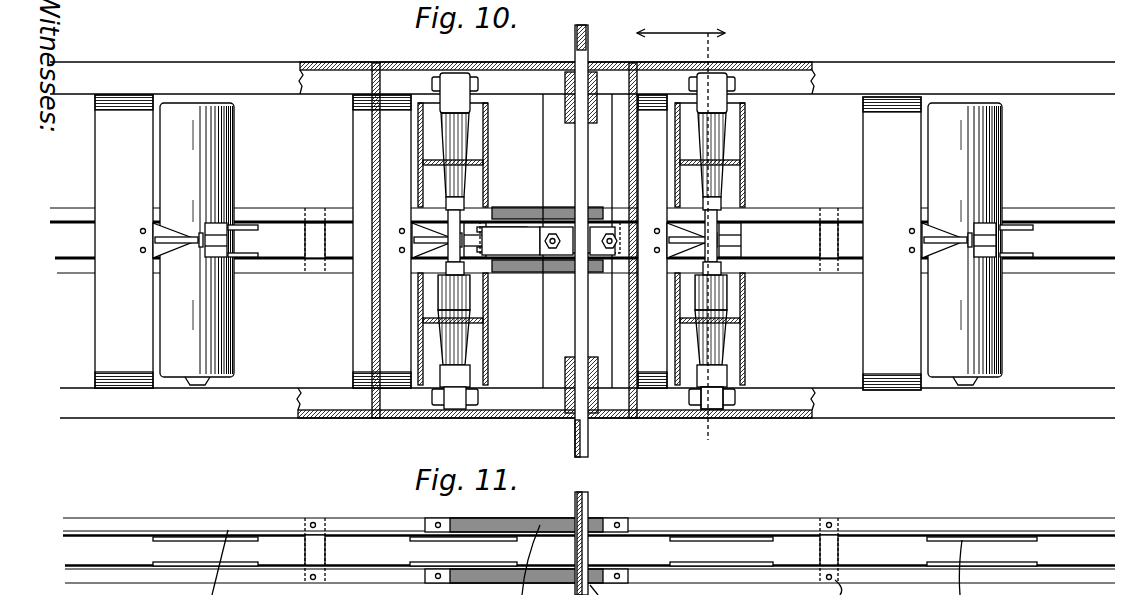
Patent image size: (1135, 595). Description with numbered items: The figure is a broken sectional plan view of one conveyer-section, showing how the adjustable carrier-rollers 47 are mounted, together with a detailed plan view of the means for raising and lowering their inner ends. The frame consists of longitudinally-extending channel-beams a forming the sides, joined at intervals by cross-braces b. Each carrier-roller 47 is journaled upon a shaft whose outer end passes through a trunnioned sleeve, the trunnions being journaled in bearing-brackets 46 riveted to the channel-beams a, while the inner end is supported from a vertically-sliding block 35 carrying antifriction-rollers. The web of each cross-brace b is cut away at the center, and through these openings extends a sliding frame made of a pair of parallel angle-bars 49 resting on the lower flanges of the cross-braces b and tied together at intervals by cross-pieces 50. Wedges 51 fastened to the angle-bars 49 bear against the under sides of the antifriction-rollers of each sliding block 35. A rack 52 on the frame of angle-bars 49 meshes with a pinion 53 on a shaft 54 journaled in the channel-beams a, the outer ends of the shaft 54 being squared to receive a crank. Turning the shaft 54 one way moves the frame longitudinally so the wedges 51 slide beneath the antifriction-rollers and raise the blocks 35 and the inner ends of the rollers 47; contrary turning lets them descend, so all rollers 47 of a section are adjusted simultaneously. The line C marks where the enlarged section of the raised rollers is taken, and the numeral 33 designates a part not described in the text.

In FIG. 10, the bearing bracket 33 is at (150, 238).
In FIG. 10, the vertically-sliding block 35 is at (250, 200).
In FIG. 10, the bearing-bracket 46 is at (703, 423).
In FIG. 10, the carrier-roller 47 is at (233, 135).
In FIG. 10, the angle-bar 49 is at (72, 224).
In FIG. 11, the angle-bar 49 is at (662, 525).
In FIG. 10, the cross-piece 50 is at (315, 243).
In FIG. 11, the cross-piece 50 is at (305, 553).
In FIG. 10, the wedge 51 is at (1033, 243).
In FIG. 10, the rack 52 is at (530, 247).
In FIG. 10, the pinion 53 is at (560, 240).
In FIG. 10, the shaft 54 is at (588, 428).
In FIG. 11, the shaft 54 is at (590, 495).
In FIG. 10, the channel-beam a is at (287, 68).
In FIG. 10, the cross-brace b is at (98, 348).
In FIG. 10, the section line C is at (681, 220).